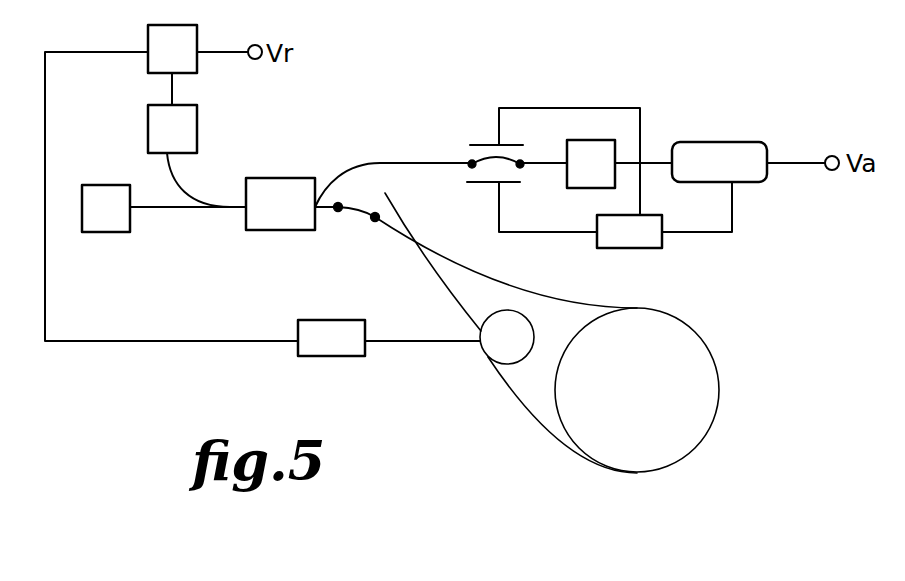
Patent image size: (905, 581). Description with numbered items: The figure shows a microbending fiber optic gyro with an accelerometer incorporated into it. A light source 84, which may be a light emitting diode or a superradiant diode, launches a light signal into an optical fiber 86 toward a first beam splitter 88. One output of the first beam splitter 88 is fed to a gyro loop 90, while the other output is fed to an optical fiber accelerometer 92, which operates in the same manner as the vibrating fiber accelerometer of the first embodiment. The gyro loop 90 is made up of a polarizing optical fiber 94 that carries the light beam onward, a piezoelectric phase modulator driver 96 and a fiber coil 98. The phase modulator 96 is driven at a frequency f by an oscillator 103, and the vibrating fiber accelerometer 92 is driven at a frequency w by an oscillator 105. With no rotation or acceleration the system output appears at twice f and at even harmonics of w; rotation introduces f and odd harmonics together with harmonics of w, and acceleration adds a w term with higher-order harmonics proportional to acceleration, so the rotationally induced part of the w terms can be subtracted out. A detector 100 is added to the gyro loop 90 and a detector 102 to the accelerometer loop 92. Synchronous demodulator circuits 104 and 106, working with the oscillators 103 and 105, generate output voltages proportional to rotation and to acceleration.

The light source 84 is at (112, 232).
The optical fiber 86 is at (183, 208).
The first beam splitter 88 is at (307, 183).
The gyro loop 90 is at (528, 487).
The optical fiber accelerometer 92 is at (483, 145).
The polarizing optical fiber 94 is at (360, 213).
The piezoelectric phase modulator driver 96 is at (480, 347).
The fiber coil 98 is at (658, 473).
The detector 100 is at (194, 125).
The detector 102 is at (580, 142).
The oscillator 103 is at (325, 325).
The synchronous demodulator circuit 104 is at (725, 147).
The oscillator 105 is at (662, 238).
The synchronous demodulator circuit 106 is at (197, 35).